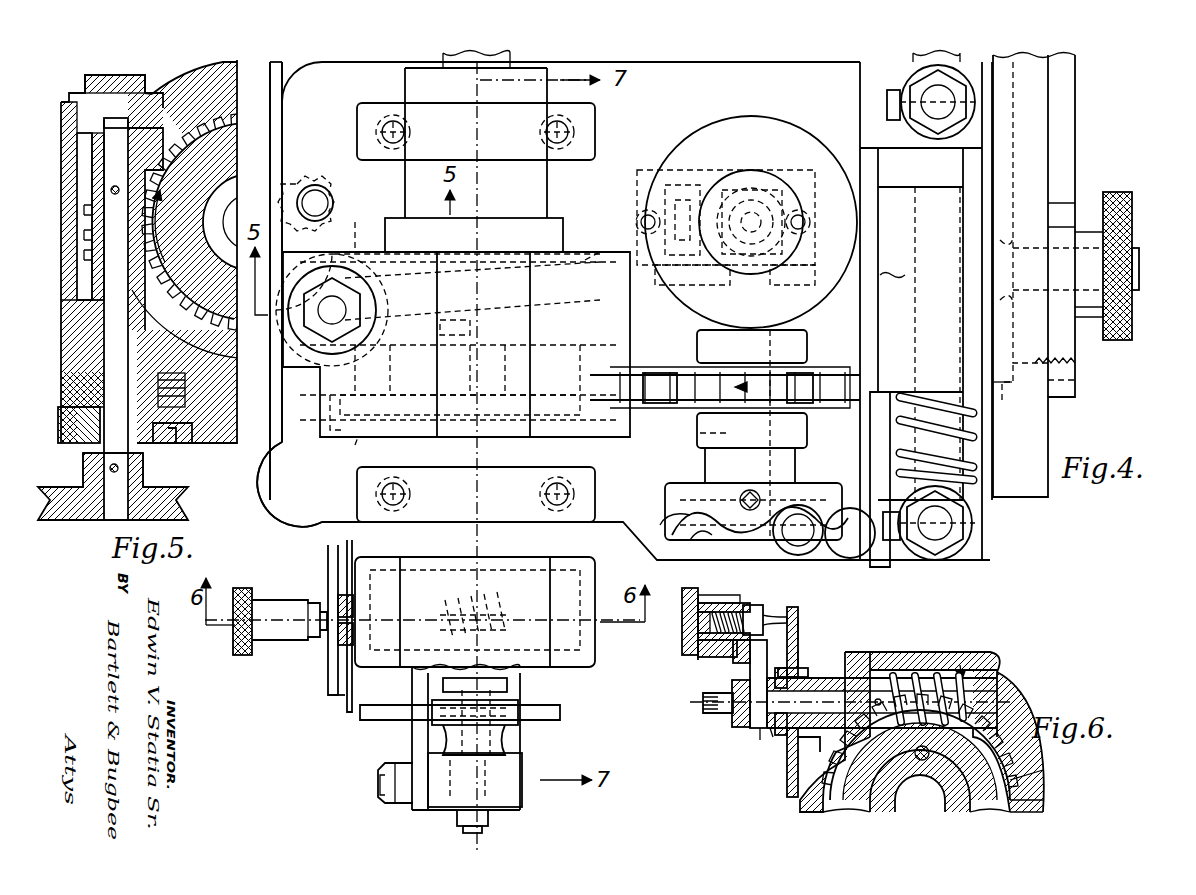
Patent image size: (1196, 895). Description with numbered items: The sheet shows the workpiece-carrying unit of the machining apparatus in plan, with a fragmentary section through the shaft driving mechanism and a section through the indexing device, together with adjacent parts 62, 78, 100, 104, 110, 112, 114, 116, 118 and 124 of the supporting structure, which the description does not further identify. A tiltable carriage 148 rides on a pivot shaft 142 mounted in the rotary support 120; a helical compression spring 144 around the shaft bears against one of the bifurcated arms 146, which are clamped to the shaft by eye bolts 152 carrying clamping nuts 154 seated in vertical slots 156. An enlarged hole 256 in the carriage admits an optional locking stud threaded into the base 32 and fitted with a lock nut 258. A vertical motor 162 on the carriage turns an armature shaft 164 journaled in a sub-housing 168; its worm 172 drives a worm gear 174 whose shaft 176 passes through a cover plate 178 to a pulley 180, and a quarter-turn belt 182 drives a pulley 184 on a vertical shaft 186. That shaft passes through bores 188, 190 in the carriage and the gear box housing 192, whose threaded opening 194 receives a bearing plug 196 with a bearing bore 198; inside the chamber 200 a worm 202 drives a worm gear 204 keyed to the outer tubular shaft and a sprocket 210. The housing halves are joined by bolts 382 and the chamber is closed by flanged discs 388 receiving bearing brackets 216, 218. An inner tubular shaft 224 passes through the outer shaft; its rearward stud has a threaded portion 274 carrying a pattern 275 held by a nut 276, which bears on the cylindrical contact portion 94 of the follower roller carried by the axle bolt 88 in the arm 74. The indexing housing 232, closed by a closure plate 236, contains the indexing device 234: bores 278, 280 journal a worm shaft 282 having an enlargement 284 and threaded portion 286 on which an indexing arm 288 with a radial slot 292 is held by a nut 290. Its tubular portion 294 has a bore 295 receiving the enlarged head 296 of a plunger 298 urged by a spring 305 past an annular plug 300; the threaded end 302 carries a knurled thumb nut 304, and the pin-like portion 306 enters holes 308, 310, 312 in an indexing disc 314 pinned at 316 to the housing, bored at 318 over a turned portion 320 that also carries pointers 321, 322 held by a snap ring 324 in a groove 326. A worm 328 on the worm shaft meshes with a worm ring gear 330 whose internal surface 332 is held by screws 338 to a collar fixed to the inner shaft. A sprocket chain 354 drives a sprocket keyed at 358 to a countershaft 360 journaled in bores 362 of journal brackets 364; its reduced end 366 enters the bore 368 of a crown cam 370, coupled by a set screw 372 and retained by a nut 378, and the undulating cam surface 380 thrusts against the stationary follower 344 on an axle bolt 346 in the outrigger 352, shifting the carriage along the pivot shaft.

In FIG. 4, the base 32 is at (273, 490).
In FIG. 4, the bracket 62 is at (420, 737).
In FIG. 4, the arm 74 is at (513, 790).
In FIG. 4, the bolt 78 is at (378, 788).
In FIG. 4, the headed axle bolt 88 is at (510, 690).
In FIG. 4, the cylindrical contact portion 94 is at (517, 728).
In FIG. 4, the column 100 is at (1025, 437).
In FIG. 4, the slot 104 is at (1020, 370).
In FIG. 4, the pin 110 is at (1009, 400).
In FIG. 4, the thread 112 is at (1060, 352).
In FIG. 4, the bore 114 is at (1068, 395).
In FIG. 4, the shaft 116 is at (1025, 245).
In FIG. 4, the stud 118 is at (1138, 265).
In FIG. 4, the rotary support 120 is at (897, 182).
In FIG. 4, the knob 124 is at (1113, 190).
In FIG. 4, the pivot shaft 142 is at (988, 582).
In FIG. 4, the helical compression spring 144 is at (975, 450).
In FIG. 4, the bifurcated bosses or arms 146 is at (1000, 77).
In FIG. 5, the tiltable carriage 148 is at (212, 443).
In FIG. 4, the tiltable carriage 148 is at (305, 497).
In FIG. 4, the eye bolts 152 is at (952, 114).
In FIG. 4, the clamping nuts 154 is at (945, 105).
In FIG. 4, the vertical slots 156 is at (893, 95).
In FIG. 4, the vertical motor 162 is at (785, 135).
In FIG. 4, the vertical armature shaft 164 is at (800, 217).
In FIG. 4, the sub-housing 168 is at (651, 172).
In FIG. 4, the worm 172 is at (760, 200).
In FIG. 4, the worm gear 174 is at (635, 205).
In FIG. 4, the shaft 176 is at (697, 185).
In FIG. 4, the cover plate 178 is at (780, 278).
In FIG. 4, the pulley 180 is at (742, 300).
In FIG. 4, the quarter-turn belt 182 is at (555, 352).
In FIG. 5, the pulley 184 is at (170, 505).
In FIG. 4, the pulley 184 is at (266, 335).
In FIG. 5, the vertical shaft 186 is at (95, 535).
In FIG. 4, the vertical shaft 186 is at (366, 227).
In FIG. 5, the bore 188 is at (135, 437).
In FIG. 5, the bore 190 is at (116, 120).
In FIG. 5, the gear box housing 192 is at (68, 345).
In FIG. 4, the gear box housing 192 is at (590, 252).
In FIG. 5, the threaded opening 194 is at (178, 95).
In FIG. 5, the threaded bearing plug 196 is at (148, 85).
In FIG. 4, the threaded bearing plug 196 is at (325, 335).
In FIG. 5, the bearing bore 198 is at (135, 152).
In FIG. 5, the chamber 200 is at (85, 288).
In FIG. 5, the worm 202 is at (88, 235).
In FIG. 5, the worm gear 204 is at (205, 103).
In FIG. 4, the worm gear 204 is at (572, 320).
In FIG. 4, the sprocket 210 is at (372, 393).
In FIG. 4, the bearing bracket 216 is at (535, 485).
In FIG. 4, the bearing bracket 218 is at (540, 186).
In FIG. 4, the inner tubular shaft 224 is at (510, 673).
In FIG. 6, the inner tubular shaft 224 is at (945, 795).
In FIG. 4, the indexing housing 232 is at (570, 638).
In FIG. 6, the indexing housing 232 is at (992, 652).
In FIG. 6, the indexing device 234 is at (965, 668).
In FIG. 4, the disc-shaped closure plate 236 is at (565, 660).
In FIG. 4, the enlarged hole 256 is at (332, 196).
In FIG. 4, the lock nut 258 is at (318, 183).
In FIG. 4, the reduced diameter partially threaded portion 274 is at (462, 830).
In FIG. 4, the pattern 275 is at (562, 714).
In FIG. 4, the nut 276 is at (495, 818).
In FIG. 6, the bore 278 is at (855, 660).
In FIG. 6, the bore 280 is at (997, 690).
In FIG. 6, the worm shaft 282 is at (995, 703).
In FIG. 6, the enlargement 284 is at (745, 737).
In FIG. 6, the partially-threaded portion 286 is at (703, 700).
In FIG. 6, the indexing arm or handle 288 is at (735, 683).
In FIG. 6, the nut 290 is at (730, 715).
In FIG. 6, the radial slot 292 is at (755, 670).
In FIG. 4, the tubular portion 294 is at (275, 606).
In FIG. 6, the tubular portion 294 is at (740, 610).
In FIG. 6, the bore 295 is at (727, 605).
In FIG. 4, the enlarged head 296 is at (317, 625).
In FIG. 6, the enlarged head 296 is at (757, 612).
In FIG. 6, the reciprocable plunger 298 is at (685, 617).
In FIG. 6, the annular plug 300 is at (705, 598).
In FIG. 6, the threaded portion 302 is at (683, 632).
In FIG. 4, the knurled thumb nut 304 is at (233, 650).
In FIG. 6, the knurled thumb nut 304 is at (683, 655).
In FIG. 6, the helical compression spring 305 is at (732, 660).
In FIG. 4, the pin-like portion 306 is at (352, 615).
In FIG. 6, the pin-like portion 306 is at (780, 618).
In FIG. 6, the holes 308 is at (797, 620).
In FIG. 6, the holes 310 is at (798, 637).
In FIG. 6, the holes 312 is at (798, 660).
In FIG. 4, the indexing disc 314 is at (345, 712).
In FIG. 6, the indexing disc 314 is at (787, 797).
In FIG. 6, the pin 316 is at (805, 672).
In FIG. 6, the central bore 318 is at (805, 712).
In FIG. 6, the turned portion 320 is at (783, 703).
In FIG. 4, the pointer 321 is at (333, 560).
In FIG. 6, the pointer 321 is at (780, 735).
In FIG. 4, the pointer 322 is at (330, 695).
In FIG. 6, the pointer 322 is at (787, 737).
In FIG. 6, the snap ring 324 is at (773, 740).
In FIG. 6, the groove 326 is at (760, 742).
In FIG. 4, the worm 328 is at (483, 600).
In FIG. 6, the worm 328 is at (905, 676).
In FIG. 6, the worm ring gear 330 is at (1012, 775).
In FIG. 6, the centrally-ridged internal cylindrical surface 332 is at (1005, 793).
In FIG. 6, the screws 338 is at (915, 755).
In FIG. 4, the cam or pattern follower 344 is at (813, 555).
In FIG. 4, the headed axle bolt 346 is at (790, 542).
In FIG. 4, the offset arm or outrigger 352 is at (875, 562).
In FIG. 4, the sprocket chain 354 is at (660, 405).
In FIG. 4, the key 358 is at (752, 430).
In FIG. 4, the countershaft 360 is at (700, 437).
In FIG. 4, the aligned bores 362 is at (700, 350).
In FIG. 4, the journal bracket 364 is at (805, 335).
In FIG. 4, the reduced diameter outer end portion 366 is at (730, 540).
In FIG. 4, the bore 368 is at (710, 467).
In FIG. 4, the crown cam 370 is at (665, 490).
In FIG. 4, the set screw 372 is at (760, 498).
In FIG. 4, the retaining nut 378 is at (692, 535).
In FIG. 4, the cam surface or edge 380 is at (670, 522).
In FIG. 4, the bolts 382 is at (488, 322).
In FIG. 4, the flanged end plates or discs 388 is at (600, 256).